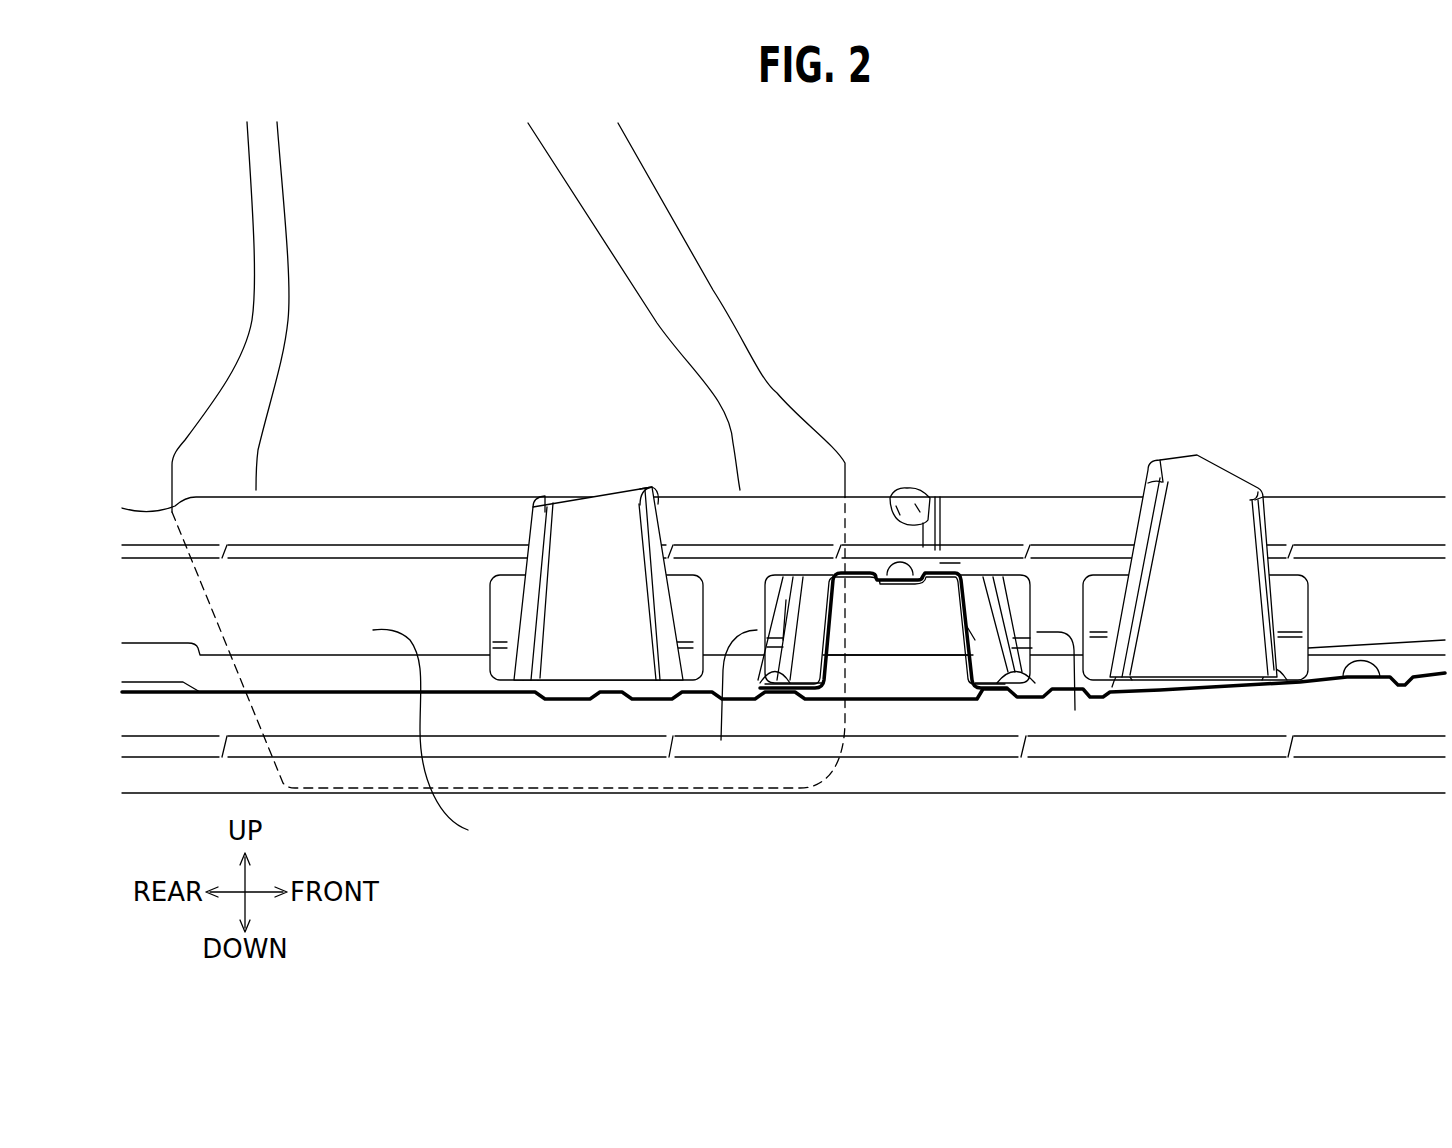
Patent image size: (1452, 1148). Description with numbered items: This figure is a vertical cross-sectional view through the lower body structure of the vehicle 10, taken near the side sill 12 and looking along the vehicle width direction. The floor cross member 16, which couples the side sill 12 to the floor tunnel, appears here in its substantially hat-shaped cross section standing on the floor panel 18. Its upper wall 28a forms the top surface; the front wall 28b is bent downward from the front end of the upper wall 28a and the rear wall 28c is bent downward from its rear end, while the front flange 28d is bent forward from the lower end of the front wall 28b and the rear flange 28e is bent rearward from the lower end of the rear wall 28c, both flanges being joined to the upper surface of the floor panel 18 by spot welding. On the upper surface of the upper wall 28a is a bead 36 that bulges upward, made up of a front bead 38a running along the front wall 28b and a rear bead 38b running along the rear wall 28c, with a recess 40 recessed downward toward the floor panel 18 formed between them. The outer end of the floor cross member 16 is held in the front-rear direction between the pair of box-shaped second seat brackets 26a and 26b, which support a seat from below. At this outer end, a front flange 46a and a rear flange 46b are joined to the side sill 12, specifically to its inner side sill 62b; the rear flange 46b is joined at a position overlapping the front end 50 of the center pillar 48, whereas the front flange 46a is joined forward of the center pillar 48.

The vehicle 10 is at (1203, 206).
The side sill 12 is at (1372, 490).
The floor cross member 16 is at (917, 617).
The floor panel 18 is at (1380, 677).
The second seat bracket 26a is at (1223, 446).
The second seat bracket 26b is at (585, 479).
The upper wall 28a is at (950, 563).
The front wall 28b is at (973, 632).
The rear wall 28c is at (790, 637).
The front flange 28d is at (1040, 680).
The rear flange 28e is at (756, 684).
The bead 36 is at (927, 442).
The front bead 38a is at (930, 550).
The rear bead 38b is at (850, 567).
The recess 40 is at (907, 583).
The front flange 46a is at (1075, 710).
The rear flange 46b is at (721, 740).
The center pillar 48 is at (672, 194).
The front end 50 is at (847, 478).
The inner side sill 62b is at (451, 739).